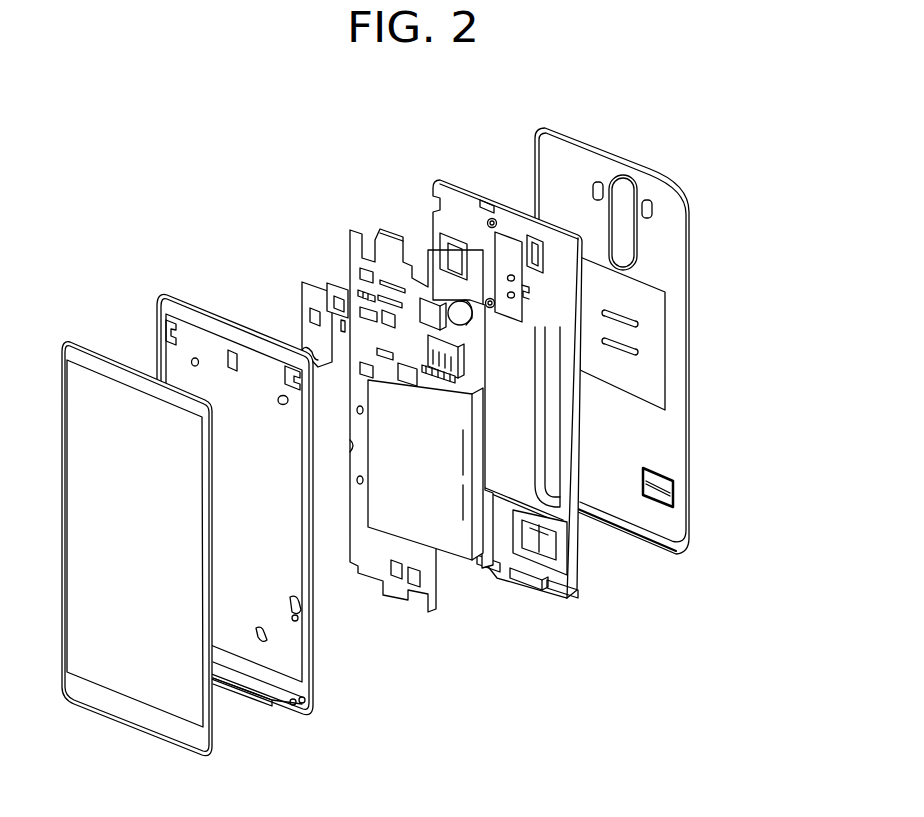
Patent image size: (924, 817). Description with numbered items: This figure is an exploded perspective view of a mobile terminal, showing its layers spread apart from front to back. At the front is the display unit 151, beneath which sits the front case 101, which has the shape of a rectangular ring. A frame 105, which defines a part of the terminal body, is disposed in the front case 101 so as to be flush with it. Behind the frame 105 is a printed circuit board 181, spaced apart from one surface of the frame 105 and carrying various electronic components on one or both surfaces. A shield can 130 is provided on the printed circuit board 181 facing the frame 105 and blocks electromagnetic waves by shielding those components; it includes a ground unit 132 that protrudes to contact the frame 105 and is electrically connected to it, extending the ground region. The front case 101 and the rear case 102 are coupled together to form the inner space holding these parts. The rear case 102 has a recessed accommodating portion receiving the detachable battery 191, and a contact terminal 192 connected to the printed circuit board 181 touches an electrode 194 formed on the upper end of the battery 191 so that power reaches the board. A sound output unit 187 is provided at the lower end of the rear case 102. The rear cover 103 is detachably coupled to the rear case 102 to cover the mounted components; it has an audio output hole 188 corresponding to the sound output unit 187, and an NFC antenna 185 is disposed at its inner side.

The display unit 151 is at (128, 712).
The front case 101 is at (313, 665).
The frame 105 is at (247, 620).
The shield can 130 is at (302, 280).
The ground unit 132 is at (312, 320).
The printed circuit board 181 is at (385, 580).
The battery 191 is at (445, 540).
The contact terminal 192 is at (440, 312).
The electrode 194 is at (437, 353).
The rear case 102 is at (567, 503).
The sound output unit 187 is at (555, 555).
The rear cover 103 is at (677, 533).
The NFC antenna 185 is at (658, 352).
The audio output hole 188 is at (675, 500).